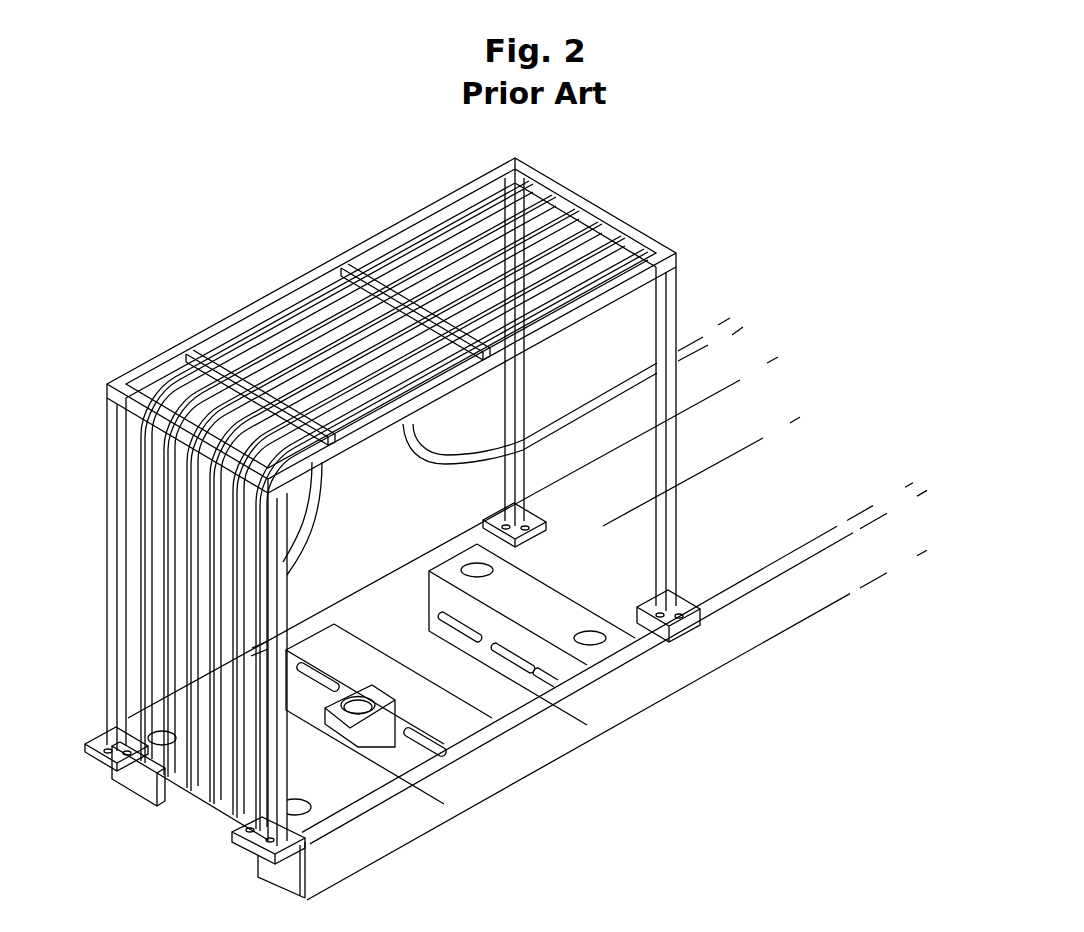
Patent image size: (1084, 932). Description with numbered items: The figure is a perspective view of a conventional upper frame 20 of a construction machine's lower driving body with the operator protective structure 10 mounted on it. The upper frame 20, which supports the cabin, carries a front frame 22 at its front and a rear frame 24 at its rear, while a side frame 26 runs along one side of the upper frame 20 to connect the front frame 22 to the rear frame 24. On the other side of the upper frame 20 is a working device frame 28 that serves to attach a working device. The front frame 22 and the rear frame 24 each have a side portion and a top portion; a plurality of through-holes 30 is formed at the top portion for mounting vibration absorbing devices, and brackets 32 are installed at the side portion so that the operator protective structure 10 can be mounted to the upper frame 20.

The operator protective structure 10 is at (683, 152).
The upper frame 20 is at (866, 683).
The front frame 22 is at (235, 783).
The rear frame 24 is at (608, 562).
The side frame 26 is at (555, 848).
The working device frame 28 is at (350, 427).
The through-holes 30 is at (160, 742).
The brackets 32 is at (300, 843).